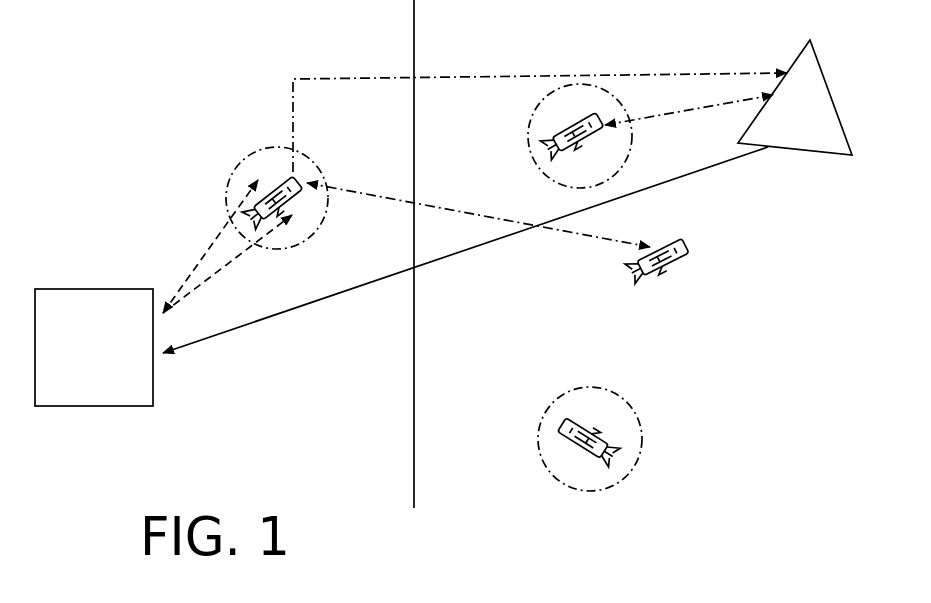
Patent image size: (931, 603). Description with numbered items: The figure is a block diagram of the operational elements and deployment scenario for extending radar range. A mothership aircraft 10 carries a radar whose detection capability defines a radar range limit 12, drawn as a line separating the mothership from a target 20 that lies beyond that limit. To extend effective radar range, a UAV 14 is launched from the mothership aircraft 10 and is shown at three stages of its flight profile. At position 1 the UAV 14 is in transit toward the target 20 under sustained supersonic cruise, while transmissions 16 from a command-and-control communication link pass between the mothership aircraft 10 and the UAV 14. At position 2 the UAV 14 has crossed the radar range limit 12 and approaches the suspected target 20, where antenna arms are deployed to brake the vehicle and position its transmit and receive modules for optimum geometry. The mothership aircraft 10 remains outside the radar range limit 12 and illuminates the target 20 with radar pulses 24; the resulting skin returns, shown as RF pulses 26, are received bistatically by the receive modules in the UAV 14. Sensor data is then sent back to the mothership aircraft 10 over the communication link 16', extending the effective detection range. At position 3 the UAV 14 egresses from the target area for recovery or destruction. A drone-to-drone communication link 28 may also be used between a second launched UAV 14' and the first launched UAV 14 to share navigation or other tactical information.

The position 1 is at (537, 107).
The position 2 is at (248, 153).
The position 3 is at (625, 398).
The mothership aircraft 10 is at (820, 142).
The radar range limit 12 is at (413, 470).
The UAV 14 is at (463, 288).
The second launched UAV 14' is at (700, 276).
The transmissions 16 is at (689, 80).
The communication link 16' is at (540, 102).
The target 20 is at (90, 365).
The radar pulses 24 is at (500, 240).
The RF pulses 26 is at (207, 257).
The drone-to-drone communication link 28 is at (453, 209).